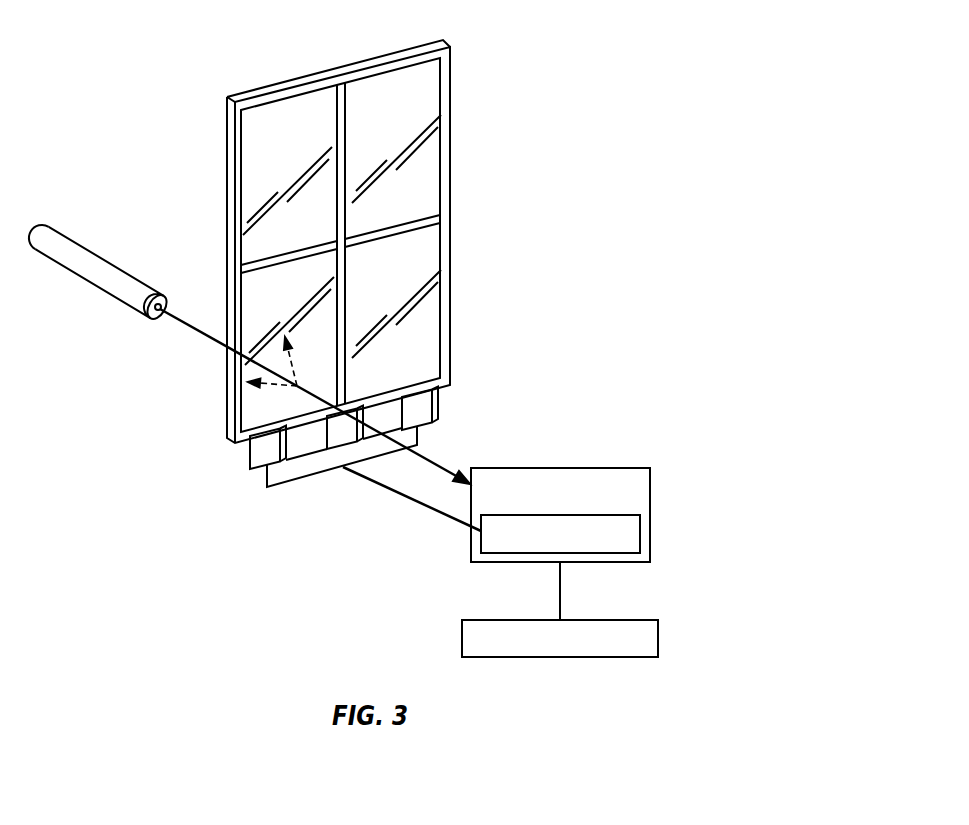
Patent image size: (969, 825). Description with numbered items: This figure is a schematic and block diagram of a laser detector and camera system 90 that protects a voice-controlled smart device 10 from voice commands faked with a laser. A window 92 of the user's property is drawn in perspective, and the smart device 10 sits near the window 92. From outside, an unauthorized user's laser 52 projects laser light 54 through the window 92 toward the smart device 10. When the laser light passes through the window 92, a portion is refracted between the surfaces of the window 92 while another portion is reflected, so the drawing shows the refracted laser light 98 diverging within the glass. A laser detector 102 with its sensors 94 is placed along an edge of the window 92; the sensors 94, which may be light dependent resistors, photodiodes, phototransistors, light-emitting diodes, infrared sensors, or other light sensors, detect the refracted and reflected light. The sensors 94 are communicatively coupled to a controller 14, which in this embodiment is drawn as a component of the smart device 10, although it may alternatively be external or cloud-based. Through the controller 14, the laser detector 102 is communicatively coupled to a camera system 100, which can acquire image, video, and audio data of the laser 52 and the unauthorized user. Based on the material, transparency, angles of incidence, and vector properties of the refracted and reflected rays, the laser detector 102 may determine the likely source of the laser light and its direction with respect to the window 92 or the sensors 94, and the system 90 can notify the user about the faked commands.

The laser detector and camera system 90 is at (585, 34).
The window 92 is at (451, 213).
The laser 52 is at (108, 259).
The laser light 54 is at (200, 334).
The refracted laser light 98 is at (417, 453).
The sensors 94 is at (436, 403).
The laser detector 102 is at (320, 473).
The smart device 10 is at (560, 468).
The controller 14 is at (641, 530).
The camera system 100 is at (659, 636).